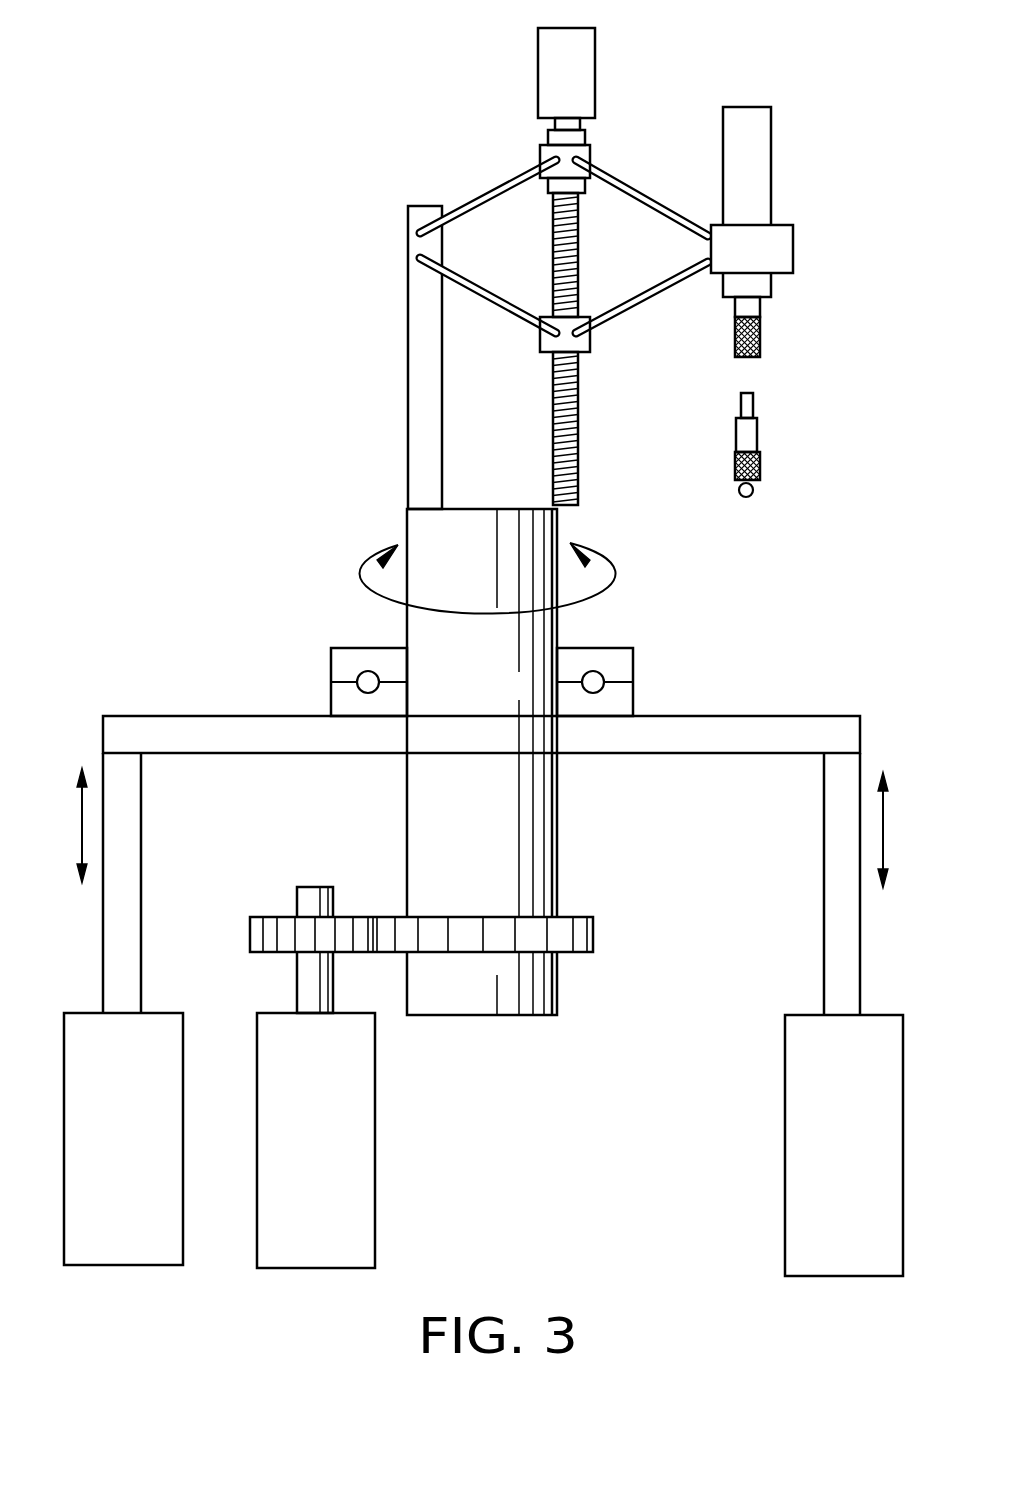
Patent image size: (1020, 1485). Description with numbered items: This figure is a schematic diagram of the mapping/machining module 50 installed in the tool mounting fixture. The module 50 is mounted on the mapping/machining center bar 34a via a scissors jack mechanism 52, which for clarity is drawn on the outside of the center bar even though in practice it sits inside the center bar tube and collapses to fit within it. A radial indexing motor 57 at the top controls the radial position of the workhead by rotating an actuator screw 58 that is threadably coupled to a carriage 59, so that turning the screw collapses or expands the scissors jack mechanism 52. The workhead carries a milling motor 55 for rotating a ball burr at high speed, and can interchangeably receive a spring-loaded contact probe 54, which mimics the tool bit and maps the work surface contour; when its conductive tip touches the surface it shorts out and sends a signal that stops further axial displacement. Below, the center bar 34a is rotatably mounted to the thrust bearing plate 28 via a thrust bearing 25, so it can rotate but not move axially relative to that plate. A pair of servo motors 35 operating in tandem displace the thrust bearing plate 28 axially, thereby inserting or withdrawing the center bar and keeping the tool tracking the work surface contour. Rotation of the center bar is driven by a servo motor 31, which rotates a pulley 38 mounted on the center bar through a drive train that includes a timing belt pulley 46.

The mapping/machining module 50 is at (445, 72).
The scissors jack mechanism 52 is at (490, 180).
The radial indexing motor 57 is at (595, 47).
The actuator screw 58 is at (578, 225).
The carriage 59 is at (590, 340).
The milling motor 55 is at (723, 132).
The spring-loaded contact probe 54 is at (735, 340).
The mapping/machining center bar 34a is at (486, 590).
The thrust bearing 25 is at (636, 660).
The thrust bearing plate 28 is at (803, 718).
The servo motors 35 is at (183, 1030).
The servo motor 31 is at (375, 1060).
The timing belt pulley 46 is at (250, 935).
The pulley 38 is at (597, 935).